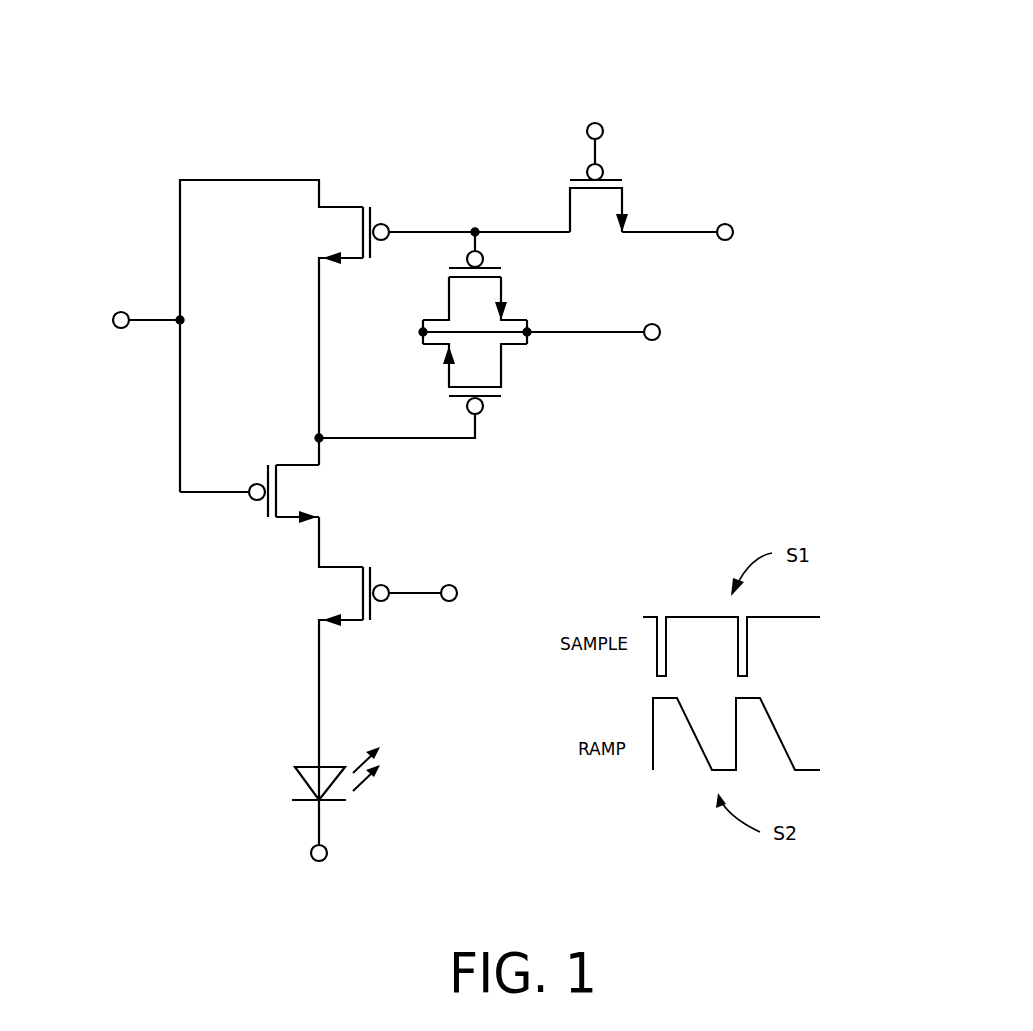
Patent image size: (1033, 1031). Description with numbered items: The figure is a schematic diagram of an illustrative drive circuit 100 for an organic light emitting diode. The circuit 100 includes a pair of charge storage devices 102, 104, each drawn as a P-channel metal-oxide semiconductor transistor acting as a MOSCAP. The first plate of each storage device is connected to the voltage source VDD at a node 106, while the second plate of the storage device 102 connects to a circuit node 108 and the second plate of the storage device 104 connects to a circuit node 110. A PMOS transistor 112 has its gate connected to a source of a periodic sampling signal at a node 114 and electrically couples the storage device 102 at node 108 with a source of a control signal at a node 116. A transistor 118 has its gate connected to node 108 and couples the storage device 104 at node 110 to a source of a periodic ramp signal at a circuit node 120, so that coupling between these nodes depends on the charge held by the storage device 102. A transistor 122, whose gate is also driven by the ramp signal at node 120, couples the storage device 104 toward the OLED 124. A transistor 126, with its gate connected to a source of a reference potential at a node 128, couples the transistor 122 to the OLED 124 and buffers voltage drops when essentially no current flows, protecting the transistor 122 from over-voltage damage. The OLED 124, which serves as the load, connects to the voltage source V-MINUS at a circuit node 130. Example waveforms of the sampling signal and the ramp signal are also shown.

The drive circuit 100 is at (480, 40).
The charge storage device 102 is at (502, 288).
The charge storage device 104 is at (502, 367).
The node 106 is at (658, 340).
The circuit node 108 is at (477, 228).
The circuit node 110 is at (323, 435).
The transistor 112 is at (625, 205).
The node 114 is at (603, 126).
The node 116 is at (732, 239).
The transistor 118 is at (338, 206).
The circuit node 120 is at (114, 327).
The transistor 122 is at (293, 524).
The organic light emitting diode 124 is at (298, 784).
The transistor 126 is at (343, 566).
The node 128 is at (456, 601).
The circuit node 130 is at (312, 861).